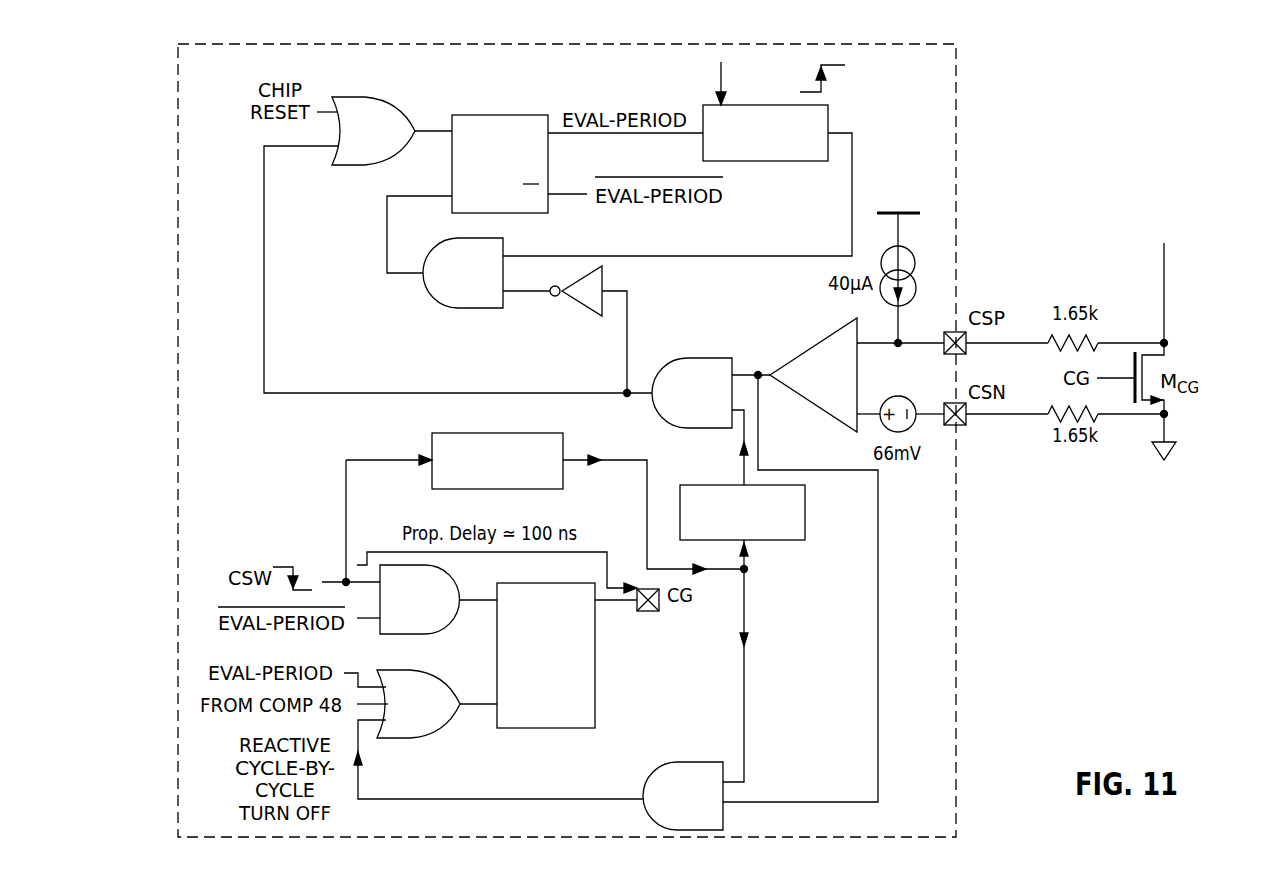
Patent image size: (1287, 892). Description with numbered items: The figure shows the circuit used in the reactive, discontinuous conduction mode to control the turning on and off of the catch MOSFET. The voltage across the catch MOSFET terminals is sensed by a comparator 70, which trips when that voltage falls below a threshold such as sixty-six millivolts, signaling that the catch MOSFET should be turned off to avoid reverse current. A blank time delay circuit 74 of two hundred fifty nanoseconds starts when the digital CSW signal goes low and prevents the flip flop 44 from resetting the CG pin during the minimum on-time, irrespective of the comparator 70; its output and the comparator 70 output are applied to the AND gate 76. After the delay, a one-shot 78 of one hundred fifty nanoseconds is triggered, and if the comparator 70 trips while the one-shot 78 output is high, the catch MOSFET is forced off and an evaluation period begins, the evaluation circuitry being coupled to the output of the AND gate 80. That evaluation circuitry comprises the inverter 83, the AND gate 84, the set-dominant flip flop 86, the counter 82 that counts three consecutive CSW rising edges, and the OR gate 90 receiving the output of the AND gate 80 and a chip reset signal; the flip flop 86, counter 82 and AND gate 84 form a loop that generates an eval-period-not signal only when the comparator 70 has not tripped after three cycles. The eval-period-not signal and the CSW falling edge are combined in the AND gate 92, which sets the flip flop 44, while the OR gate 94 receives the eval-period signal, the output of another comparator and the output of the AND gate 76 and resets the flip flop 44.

The OR gate 90 is at (358, 95).
The set-dominant flip flop 86 is at (484, 114).
The counter 82 is at (829, 117).
The AND gate 84 is at (474, 309).
The inverter 83 is at (585, 311).
The comparator 70 is at (807, 351).
The AND gate 80 is at (705, 429).
The 150 ns one-shot 78 is at (806, 522).
The 250 ns blank time delay circuit 74 is at (432, 438).
The AND gate 92 is at (449, 630).
The flip flop 44 is at (596, 692).
The OR gate 94 is at (408, 740).
The AND gate 76 is at (692, 762).